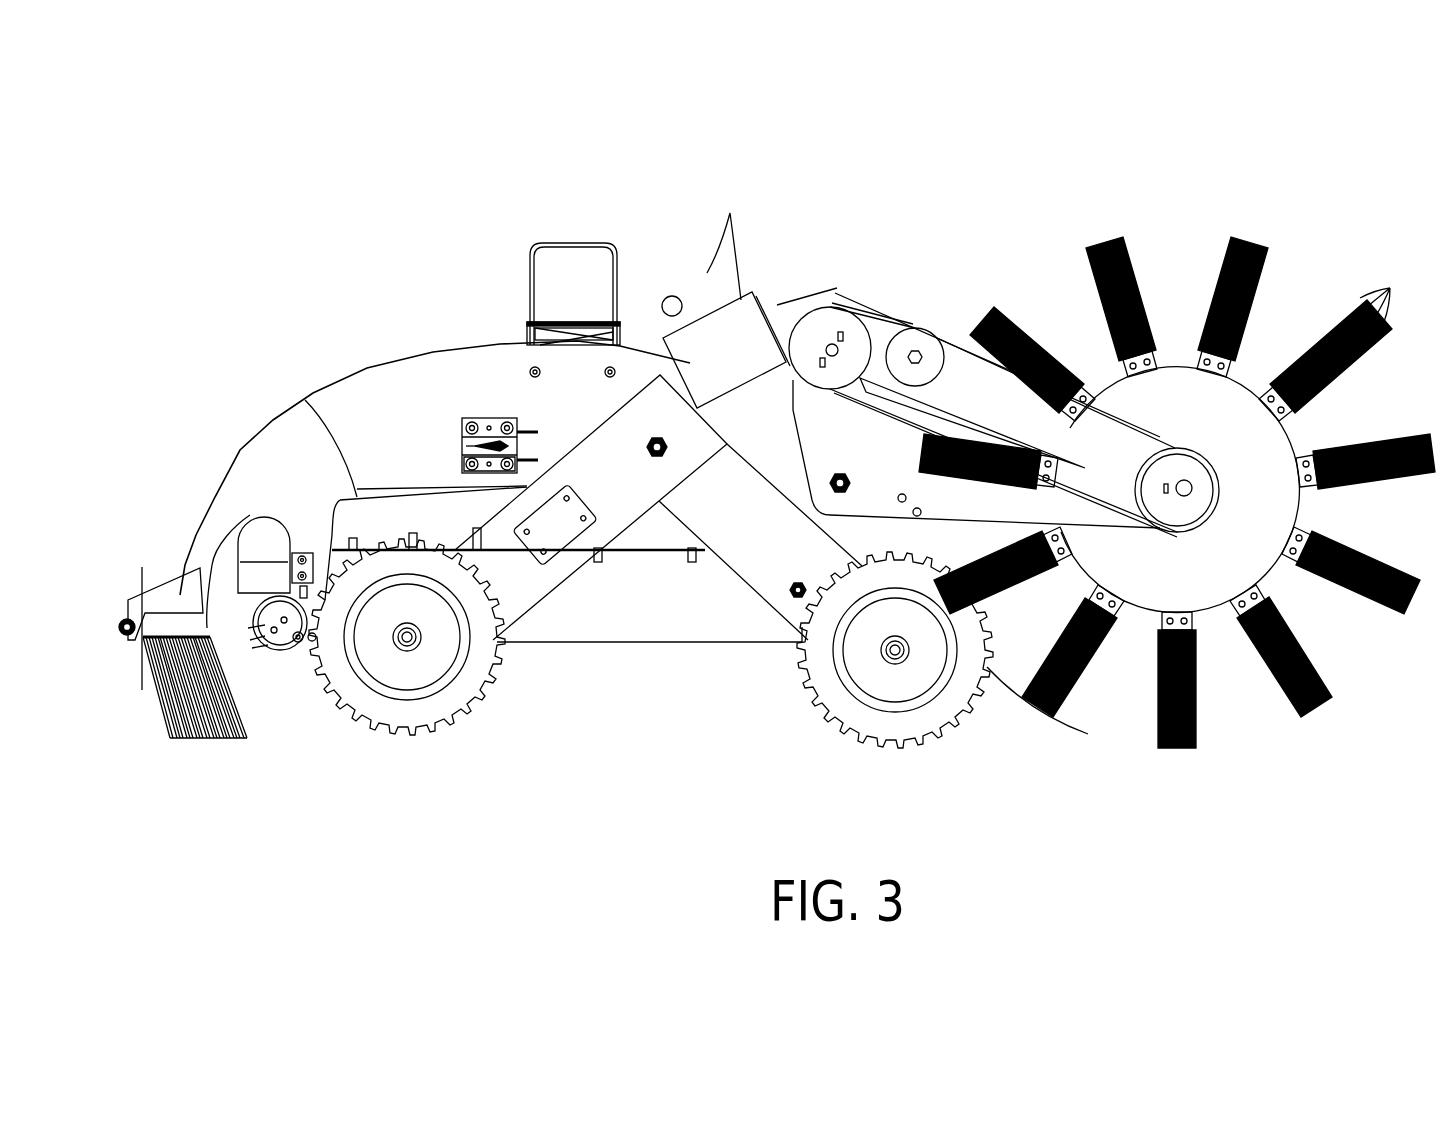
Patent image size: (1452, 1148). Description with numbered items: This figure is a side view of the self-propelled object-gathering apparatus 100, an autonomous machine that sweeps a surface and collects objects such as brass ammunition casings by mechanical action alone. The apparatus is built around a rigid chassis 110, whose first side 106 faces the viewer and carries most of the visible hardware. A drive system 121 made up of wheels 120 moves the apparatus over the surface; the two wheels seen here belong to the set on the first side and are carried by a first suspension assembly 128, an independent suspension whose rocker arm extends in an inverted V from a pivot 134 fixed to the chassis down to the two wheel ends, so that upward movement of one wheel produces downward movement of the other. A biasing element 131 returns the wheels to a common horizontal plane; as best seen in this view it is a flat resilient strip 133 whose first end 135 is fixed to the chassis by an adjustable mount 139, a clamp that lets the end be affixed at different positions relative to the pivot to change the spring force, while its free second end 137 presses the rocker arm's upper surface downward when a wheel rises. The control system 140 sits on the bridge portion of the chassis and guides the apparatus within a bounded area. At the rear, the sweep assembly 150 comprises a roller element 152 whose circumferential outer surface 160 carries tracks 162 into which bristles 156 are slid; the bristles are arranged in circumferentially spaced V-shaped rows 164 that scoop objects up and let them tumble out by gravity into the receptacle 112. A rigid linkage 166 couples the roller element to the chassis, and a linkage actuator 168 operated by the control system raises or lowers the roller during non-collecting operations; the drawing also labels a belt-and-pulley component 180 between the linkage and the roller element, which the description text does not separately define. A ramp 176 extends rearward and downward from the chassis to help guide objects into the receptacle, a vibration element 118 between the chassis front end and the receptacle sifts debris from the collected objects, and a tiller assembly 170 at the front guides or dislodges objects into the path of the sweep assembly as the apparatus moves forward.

The self-propelled object-gathering apparatus 100 is at (527, 150).
The first side of chassis 106 is at (220, 488).
The chassis 110 is at (353, 378).
The receptacle 112 is at (357, 489).
The vibration element 118 is at (280, 650).
The wheel 120 is at (413, 731).
The drive system 121 is at (485, 742).
The first suspension assembly 128 is at (690, 600).
The biasing element 131 is at (486, 403).
The resilient strip 133 is at (548, 440).
The pivot 134 is at (657, 437).
The first end of resilient strip 135 is at (460, 445).
The free second end of resilient strip 137 is at (537, 340).
The adjustable mount 139 is at (460, 467).
The control system 140 is at (567, 243).
The sweep assembly 150 is at (1347, 212).
The roller element 152 is at (1267, 503).
The bristles 156 is at (1390, 295).
The circumferential outer surface 160 is at (1176, 366).
The tracks 162 is at (1237, 370).
The rows 164 is at (1395, 635).
The rigid linkage 166 is at (975, 528).
The linkage actuator 168 is at (731, 216).
The tiller assembly 170 is at (190, 775).
The ramp 176 is at (1087, 738).
The belt drive 180 is at (942, 413).